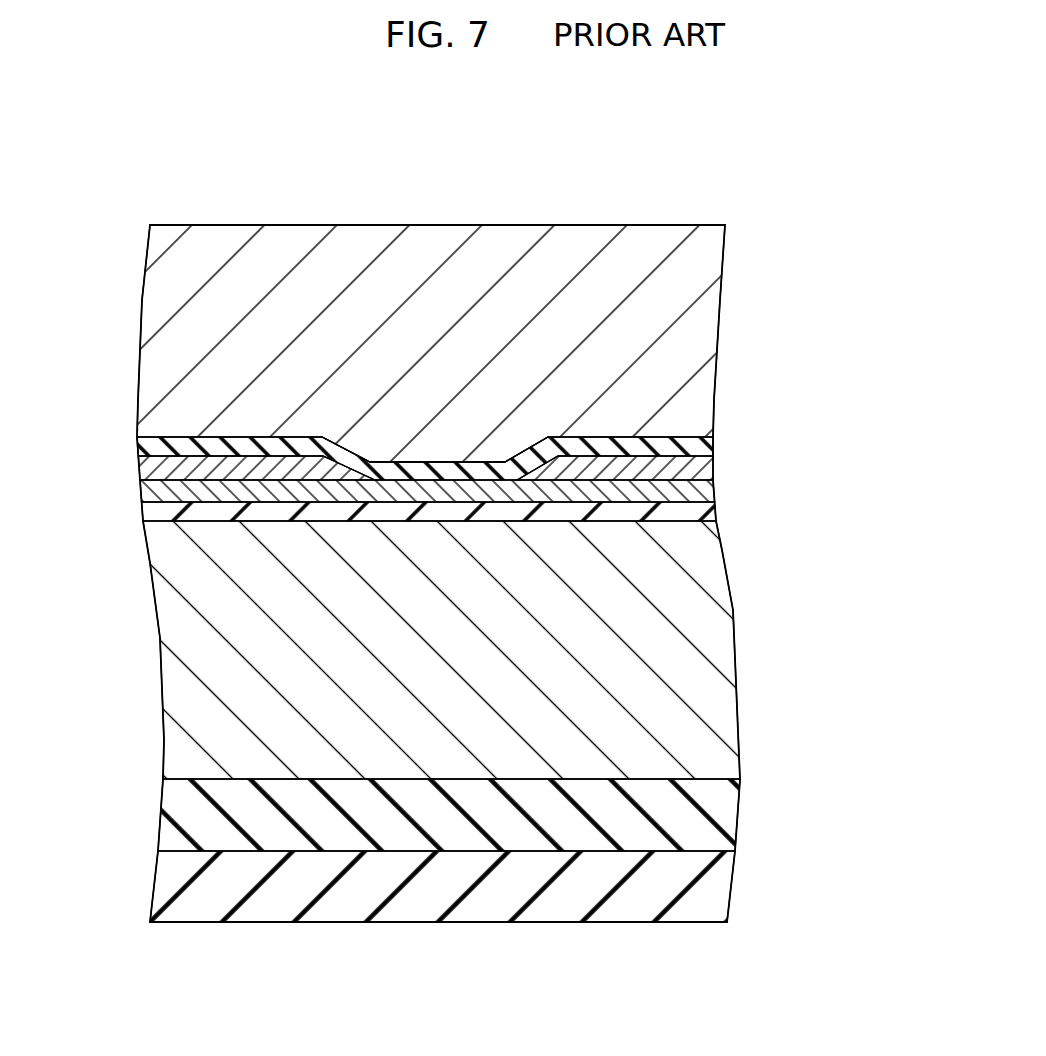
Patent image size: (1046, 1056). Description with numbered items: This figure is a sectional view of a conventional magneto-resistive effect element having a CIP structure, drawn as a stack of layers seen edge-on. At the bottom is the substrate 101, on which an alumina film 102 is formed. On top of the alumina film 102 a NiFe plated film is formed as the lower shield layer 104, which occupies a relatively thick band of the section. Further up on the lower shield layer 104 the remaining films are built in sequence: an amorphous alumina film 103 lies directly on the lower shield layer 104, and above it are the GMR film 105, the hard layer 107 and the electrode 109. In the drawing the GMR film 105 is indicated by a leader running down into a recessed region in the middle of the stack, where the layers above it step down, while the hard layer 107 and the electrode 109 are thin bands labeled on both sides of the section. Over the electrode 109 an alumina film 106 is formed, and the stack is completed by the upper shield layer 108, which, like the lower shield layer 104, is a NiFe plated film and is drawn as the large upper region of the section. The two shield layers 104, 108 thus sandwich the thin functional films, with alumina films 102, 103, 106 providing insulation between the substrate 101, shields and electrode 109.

The substrate 101 is at (713, 886).
The alumina film 102 is at (715, 818).
The amorphous alumina film 103 is at (706, 520).
The lower shield layer 104 is at (710, 638).
The GMR film 105 is at (448, 483).
The alumina film 106 is at (712, 447).
The hard layer 107 is at (708, 492).
The upper shield layer 108 is at (688, 326).
The electrode 109 is at (712, 464).